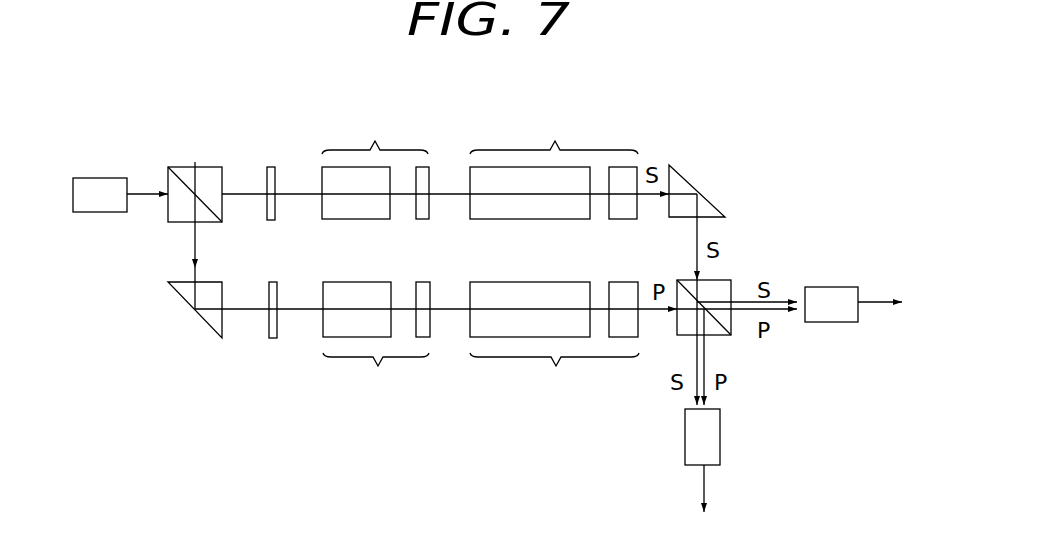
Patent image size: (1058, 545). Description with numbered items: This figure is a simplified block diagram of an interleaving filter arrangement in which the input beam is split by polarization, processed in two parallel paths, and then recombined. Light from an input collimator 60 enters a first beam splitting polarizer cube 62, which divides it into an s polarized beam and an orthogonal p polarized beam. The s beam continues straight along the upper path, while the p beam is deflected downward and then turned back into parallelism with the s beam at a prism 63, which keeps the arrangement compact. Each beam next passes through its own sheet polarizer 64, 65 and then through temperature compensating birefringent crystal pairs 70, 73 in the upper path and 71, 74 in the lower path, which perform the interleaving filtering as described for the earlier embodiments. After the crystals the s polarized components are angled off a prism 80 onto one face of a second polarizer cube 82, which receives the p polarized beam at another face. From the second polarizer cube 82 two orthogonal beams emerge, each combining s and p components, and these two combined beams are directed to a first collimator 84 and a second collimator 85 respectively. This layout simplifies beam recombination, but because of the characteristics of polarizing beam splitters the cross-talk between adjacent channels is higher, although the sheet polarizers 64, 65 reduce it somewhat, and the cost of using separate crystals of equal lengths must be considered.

The input collimator 60 is at (103, 178).
The first beam splitting polarizer cube 62 is at (190, 167).
The prism 63 is at (202, 323).
The sheet polarizer 64 is at (270, 167).
The sheet polarizer 65 is at (272, 338).
The temperature compensating birefringent crystal pair 70 is at (375, 166).
The temperature compensating birefringent crystal pair 71 is at (376, 340).
The temperature compensating birefringent crystal pair 73 is at (554, 166).
The temperature compensating birefringent crystal pair 74 is at (554, 340).
The prism 80 is at (687, 174).
The second polarizer cube 82 is at (722, 280).
The first collimator 84 is at (822, 287).
The second collimator 85 is at (720, 435).